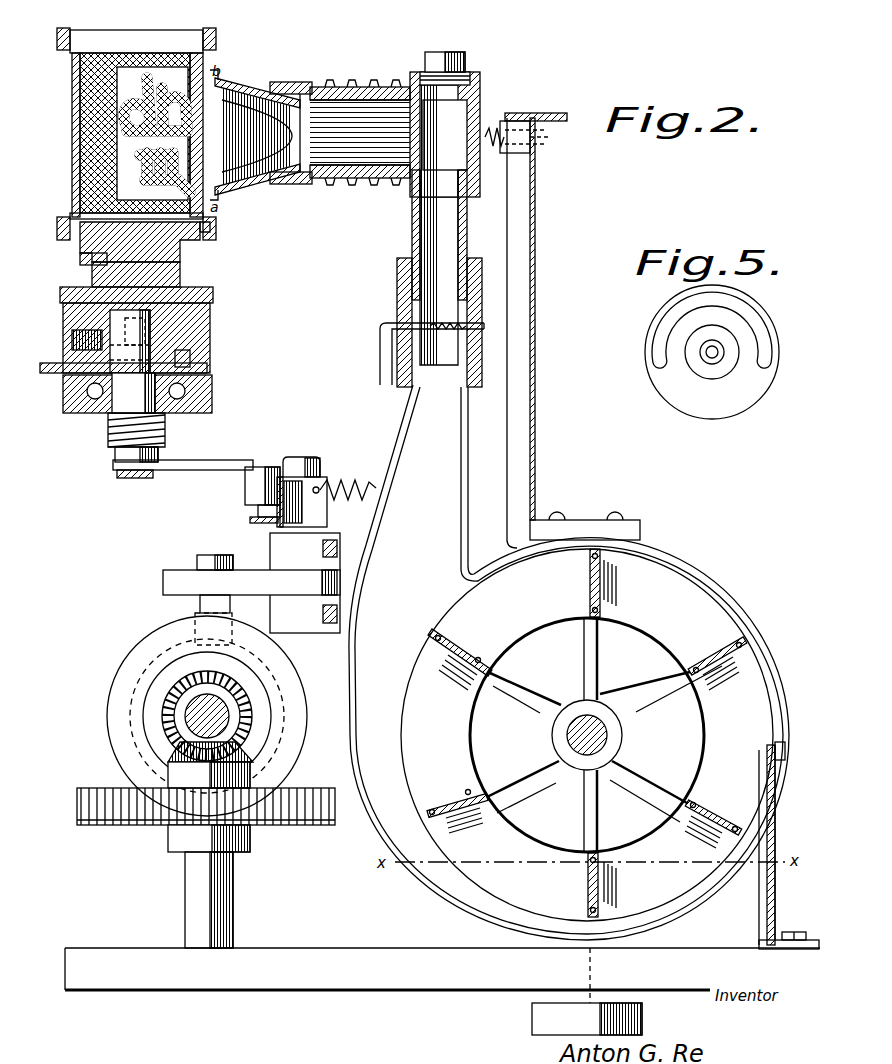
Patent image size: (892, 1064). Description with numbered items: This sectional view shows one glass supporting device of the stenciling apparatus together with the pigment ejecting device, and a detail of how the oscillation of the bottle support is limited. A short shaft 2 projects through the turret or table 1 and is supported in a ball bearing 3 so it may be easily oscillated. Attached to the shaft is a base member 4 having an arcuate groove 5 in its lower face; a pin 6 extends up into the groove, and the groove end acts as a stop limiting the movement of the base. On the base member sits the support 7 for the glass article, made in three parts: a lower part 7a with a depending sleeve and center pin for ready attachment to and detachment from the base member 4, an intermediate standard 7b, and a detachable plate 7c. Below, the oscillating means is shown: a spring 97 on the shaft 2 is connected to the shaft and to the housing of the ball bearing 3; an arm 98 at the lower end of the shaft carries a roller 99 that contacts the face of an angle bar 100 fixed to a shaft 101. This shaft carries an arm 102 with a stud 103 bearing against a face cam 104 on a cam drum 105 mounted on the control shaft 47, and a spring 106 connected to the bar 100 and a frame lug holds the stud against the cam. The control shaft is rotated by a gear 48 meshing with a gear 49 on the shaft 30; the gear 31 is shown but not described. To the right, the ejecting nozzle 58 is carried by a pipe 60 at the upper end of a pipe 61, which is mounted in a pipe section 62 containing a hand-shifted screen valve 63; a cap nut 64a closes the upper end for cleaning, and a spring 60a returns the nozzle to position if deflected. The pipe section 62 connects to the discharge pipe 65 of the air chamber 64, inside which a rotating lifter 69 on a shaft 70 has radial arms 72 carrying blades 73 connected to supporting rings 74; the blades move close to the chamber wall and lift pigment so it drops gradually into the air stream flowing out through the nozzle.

In FIG. 2, the turret or table 1 is at (213, 370).
In FIG. 2, the short shaft 2 is at (133, 393).
In FIG. 2, the ball bearing 3 is at (213, 393).
In FIG. 2, the base member 4 is at (210, 312).
In FIG. 5, the base member 4 is at (712, 352).
In FIG. 2, the arcuate groove 5 is at (80, 358).
In FIG. 5, the arcuate groove 5 is at (672, 325).
In FIG. 2, the pin 6 is at (203, 353).
In FIG. 2, the support 7 is at (167, 252).
In FIG. 2, the lower part 7a is at (180, 290).
In FIG. 2, the intermediate standard 7b is at (100, 259).
In FIG. 2, the detachable plate 7c is at (220, 215).
In FIG. 2, the shaft 30 is at (203, 895).
In FIG. 2, the gear 31 is at (117, 823).
In FIG. 2, the control shaft 47 is at (197, 700).
In FIG. 2, the gear 48 is at (247, 693).
In FIG. 2, the gear 49 is at (173, 755).
In FIG. 2, the ejecting nozzle 58 is at (237, 86).
In FIG. 2, the pipe 60 is at (353, 110).
In FIG. 2, the spring 60a is at (523, 177).
In FIG. 2, the pipe 61 is at (412, 233).
In FIG. 2, the pipe section 62 is at (397, 272).
In FIG. 2, the screen valve 63 is at (397, 312).
In FIG. 2, the air chamber 64 is at (668, 562).
In FIG. 2, the cap nut 64a is at (457, 56).
In FIG. 2, the discharge pipe 65 is at (468, 440).
In FIG. 2, the rotating lifter 69 is at (625, 697).
In FIG. 2, the shaft 70 is at (600, 735).
In FIG. 2, the radial arms 72 is at (510, 690).
In FIG. 2, the blades 73 is at (450, 803).
In FIG. 2, the supporting rings 74 is at (460, 604).
In FIG. 2, the spring 97 is at (106, 443).
In FIG. 2, the arm 98 is at (193, 457).
In FIG. 2, the roller 99 is at (253, 488).
In FIG. 2, the bar 100 is at (253, 522).
In FIG. 2, the shaft 101 is at (297, 460).
In FIG. 2, the arm 102 is at (253, 553).
In FIG. 2, the stud 103 is at (175, 613).
In FIG. 2, the face cam 104 is at (130, 690).
In FIG. 2, the cam drum 105 is at (143, 735).
In FIG. 2, the spring 106 is at (347, 480).